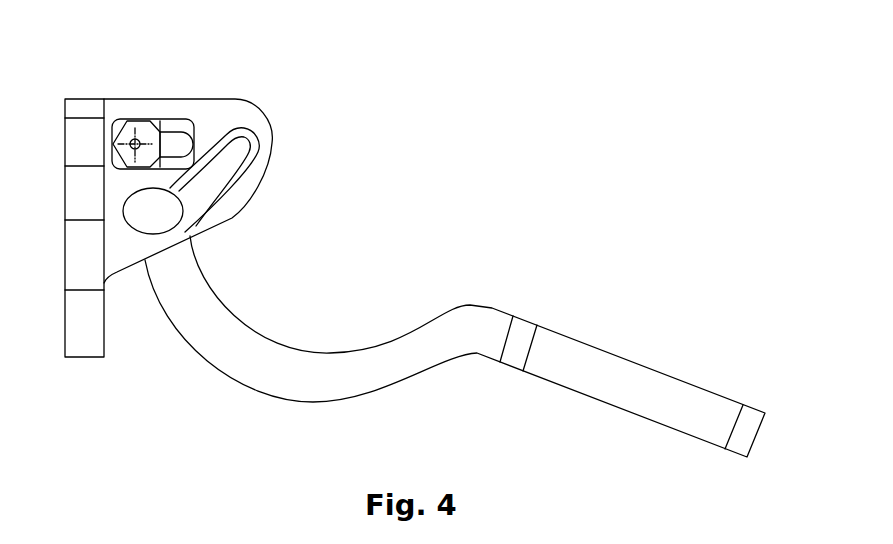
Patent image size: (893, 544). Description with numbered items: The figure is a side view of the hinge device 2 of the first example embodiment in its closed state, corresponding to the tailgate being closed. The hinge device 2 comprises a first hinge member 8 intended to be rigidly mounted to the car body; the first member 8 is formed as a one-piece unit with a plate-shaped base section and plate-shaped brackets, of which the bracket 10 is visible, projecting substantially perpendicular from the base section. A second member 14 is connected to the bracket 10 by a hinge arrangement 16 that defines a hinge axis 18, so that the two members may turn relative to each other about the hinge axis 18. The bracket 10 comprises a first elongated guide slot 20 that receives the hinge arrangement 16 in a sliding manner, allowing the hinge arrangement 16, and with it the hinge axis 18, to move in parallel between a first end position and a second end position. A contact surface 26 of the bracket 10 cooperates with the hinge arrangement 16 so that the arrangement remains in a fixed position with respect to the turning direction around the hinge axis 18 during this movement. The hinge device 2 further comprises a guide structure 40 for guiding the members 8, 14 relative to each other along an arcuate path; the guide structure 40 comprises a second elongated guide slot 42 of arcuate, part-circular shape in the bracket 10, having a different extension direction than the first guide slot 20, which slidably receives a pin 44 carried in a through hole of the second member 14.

The hinge device 2 is at (450, 150).
The first hinge member 8 is at (80, 325).
The bracket 10 is at (213, 117).
The second member 14 is at (333, 373).
The hinge arrangement 16 is at (119, 121).
The hinge axis 18 is at (143, 123).
The first elongated guide slot 20 is at (170, 128).
The contact surface 26 is at (192, 121).
The guide structure 40 is at (247, 207).
The second elongated guide slot 42 is at (243, 170).
The pin 44 is at (150, 212).